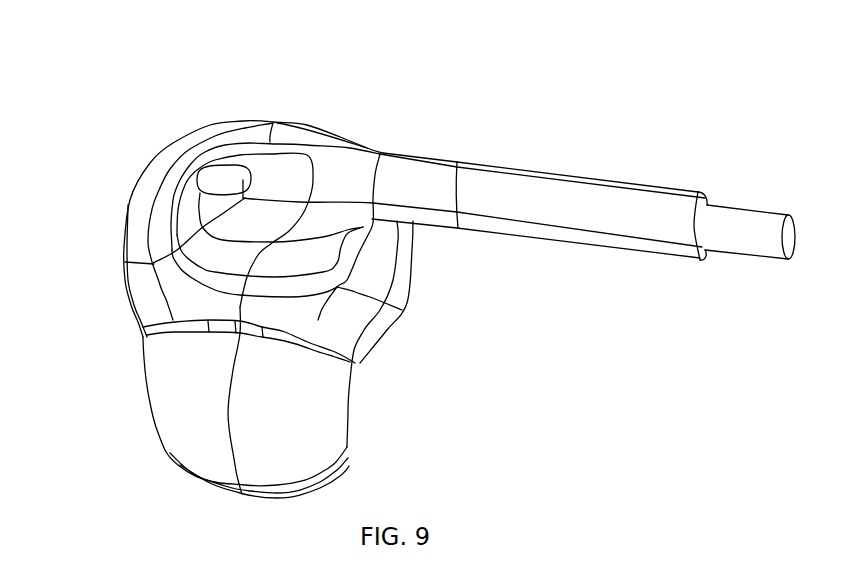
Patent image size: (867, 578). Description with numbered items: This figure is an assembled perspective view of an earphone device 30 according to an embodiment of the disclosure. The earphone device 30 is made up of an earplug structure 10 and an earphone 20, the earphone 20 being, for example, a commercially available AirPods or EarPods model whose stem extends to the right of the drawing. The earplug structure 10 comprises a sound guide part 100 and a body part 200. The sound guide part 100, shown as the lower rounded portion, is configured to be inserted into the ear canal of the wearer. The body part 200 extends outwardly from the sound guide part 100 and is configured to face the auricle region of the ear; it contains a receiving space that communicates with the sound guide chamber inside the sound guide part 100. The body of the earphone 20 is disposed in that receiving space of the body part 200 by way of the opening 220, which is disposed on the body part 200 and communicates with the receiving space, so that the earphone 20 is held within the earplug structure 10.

The earphone device 30 is at (598, 53).
The earplug structure 10 is at (140, 193).
The earphone 20 is at (423, 182).
The sound guide part 100 is at (167, 402).
The body part 200 is at (140, 250).
The opening 220 is at (187, 161).